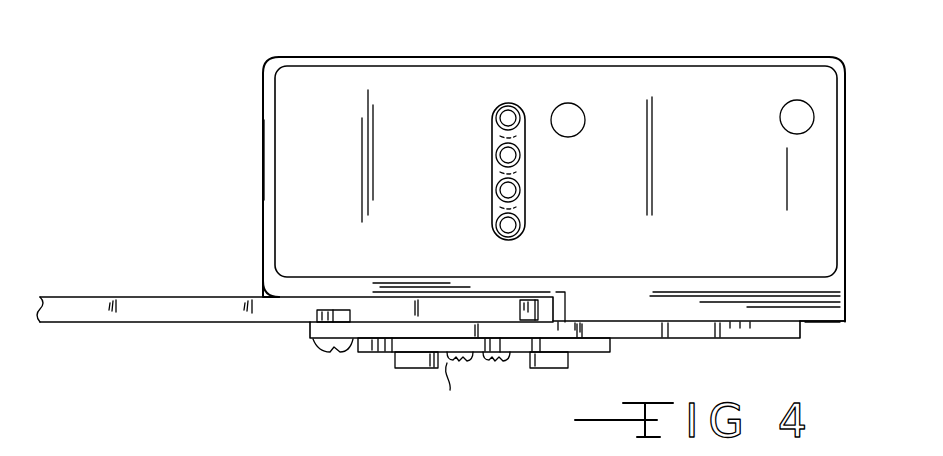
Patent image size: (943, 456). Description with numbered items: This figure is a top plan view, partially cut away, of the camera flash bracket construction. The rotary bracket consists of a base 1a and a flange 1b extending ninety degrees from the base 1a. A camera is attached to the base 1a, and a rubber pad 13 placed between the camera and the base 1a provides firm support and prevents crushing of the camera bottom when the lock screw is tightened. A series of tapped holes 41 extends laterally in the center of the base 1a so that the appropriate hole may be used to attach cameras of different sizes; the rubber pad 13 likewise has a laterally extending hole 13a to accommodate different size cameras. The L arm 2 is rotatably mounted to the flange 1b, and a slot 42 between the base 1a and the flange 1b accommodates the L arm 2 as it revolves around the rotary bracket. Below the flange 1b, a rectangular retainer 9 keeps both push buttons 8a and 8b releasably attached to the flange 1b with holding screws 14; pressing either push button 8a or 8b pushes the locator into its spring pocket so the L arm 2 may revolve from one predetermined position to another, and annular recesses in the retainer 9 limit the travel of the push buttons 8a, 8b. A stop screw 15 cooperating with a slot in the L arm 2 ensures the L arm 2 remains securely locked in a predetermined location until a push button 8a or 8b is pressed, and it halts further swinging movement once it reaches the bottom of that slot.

The base 1a is at (263, 135).
The flange 1b is at (695, 339).
The L arm 2 is at (115, 323).
The push button 8a is at (400, 369).
The push button 8b is at (550, 369).
The rectangular retainer 9 is at (592, 353).
The rubber pad 13 is at (658, 58).
The terminal strip 13a is at (525, 205).
The holding screws 14 is at (483, 362).
The stop screw 15 is at (313, 347).
The tapped holes 41 is at (492, 128).
The slot 42 is at (558, 302).